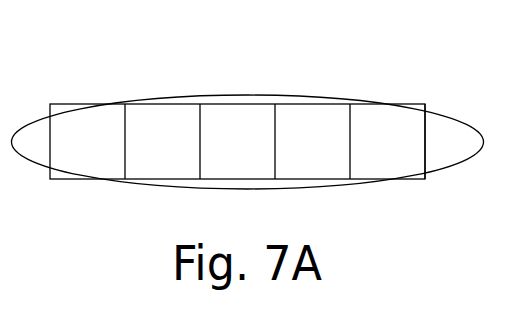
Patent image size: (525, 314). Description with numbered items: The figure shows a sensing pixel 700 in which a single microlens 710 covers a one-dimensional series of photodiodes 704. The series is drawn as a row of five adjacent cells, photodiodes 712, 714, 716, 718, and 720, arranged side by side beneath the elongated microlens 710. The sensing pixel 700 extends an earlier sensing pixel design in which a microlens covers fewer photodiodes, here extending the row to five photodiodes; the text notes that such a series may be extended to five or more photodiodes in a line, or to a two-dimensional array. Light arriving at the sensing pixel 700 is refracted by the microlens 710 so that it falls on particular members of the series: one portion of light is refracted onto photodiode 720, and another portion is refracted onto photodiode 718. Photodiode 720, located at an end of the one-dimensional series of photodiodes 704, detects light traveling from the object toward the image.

The sensing pixel 700 is at (124, 48).
The one-dimensional series of photodiodes 704 is at (424, 97).
The microlens 710 is at (293, 95).
The photodiode 712 is at (108, 155).
The photodiode 714 is at (183, 155).
The photodiode 716 is at (258, 155).
The photodiode 718 is at (333, 155).
The photodiode 720 is at (405, 155).